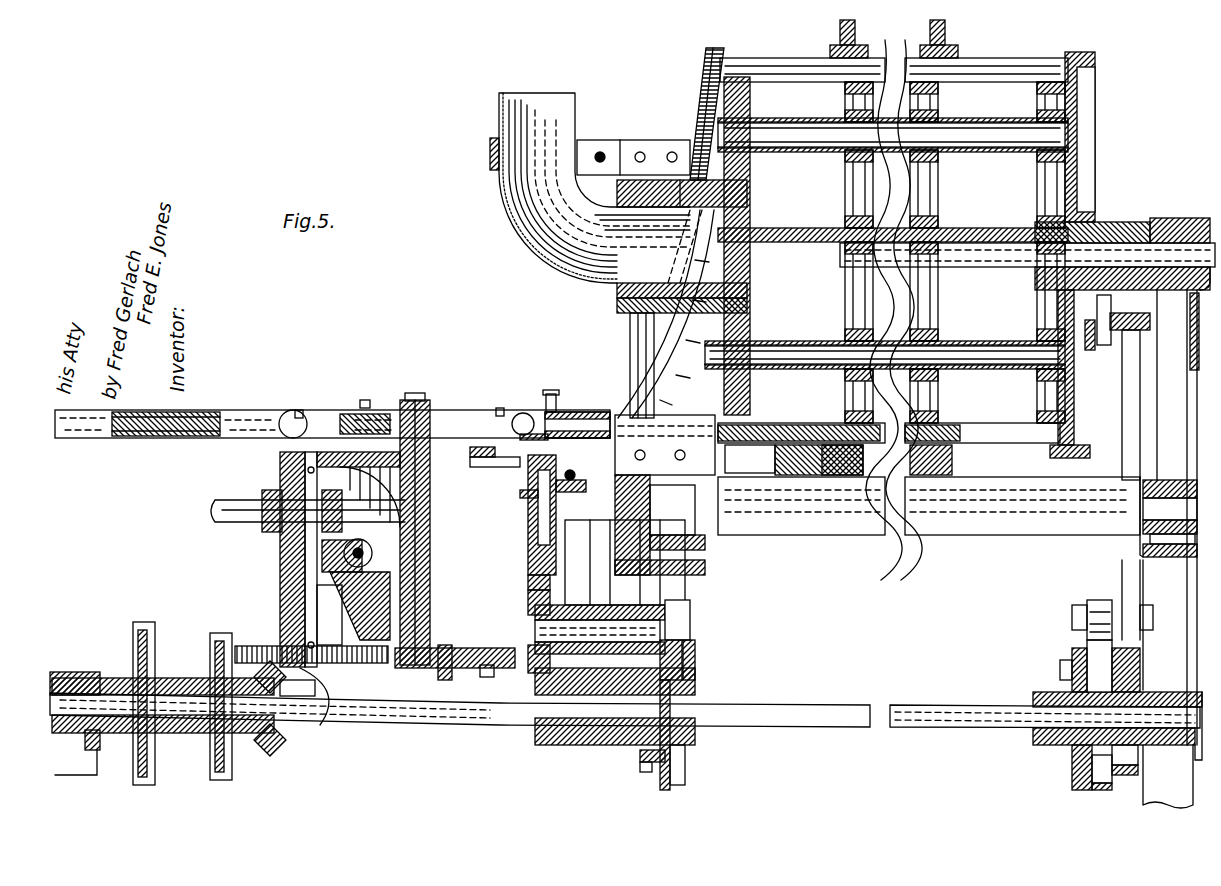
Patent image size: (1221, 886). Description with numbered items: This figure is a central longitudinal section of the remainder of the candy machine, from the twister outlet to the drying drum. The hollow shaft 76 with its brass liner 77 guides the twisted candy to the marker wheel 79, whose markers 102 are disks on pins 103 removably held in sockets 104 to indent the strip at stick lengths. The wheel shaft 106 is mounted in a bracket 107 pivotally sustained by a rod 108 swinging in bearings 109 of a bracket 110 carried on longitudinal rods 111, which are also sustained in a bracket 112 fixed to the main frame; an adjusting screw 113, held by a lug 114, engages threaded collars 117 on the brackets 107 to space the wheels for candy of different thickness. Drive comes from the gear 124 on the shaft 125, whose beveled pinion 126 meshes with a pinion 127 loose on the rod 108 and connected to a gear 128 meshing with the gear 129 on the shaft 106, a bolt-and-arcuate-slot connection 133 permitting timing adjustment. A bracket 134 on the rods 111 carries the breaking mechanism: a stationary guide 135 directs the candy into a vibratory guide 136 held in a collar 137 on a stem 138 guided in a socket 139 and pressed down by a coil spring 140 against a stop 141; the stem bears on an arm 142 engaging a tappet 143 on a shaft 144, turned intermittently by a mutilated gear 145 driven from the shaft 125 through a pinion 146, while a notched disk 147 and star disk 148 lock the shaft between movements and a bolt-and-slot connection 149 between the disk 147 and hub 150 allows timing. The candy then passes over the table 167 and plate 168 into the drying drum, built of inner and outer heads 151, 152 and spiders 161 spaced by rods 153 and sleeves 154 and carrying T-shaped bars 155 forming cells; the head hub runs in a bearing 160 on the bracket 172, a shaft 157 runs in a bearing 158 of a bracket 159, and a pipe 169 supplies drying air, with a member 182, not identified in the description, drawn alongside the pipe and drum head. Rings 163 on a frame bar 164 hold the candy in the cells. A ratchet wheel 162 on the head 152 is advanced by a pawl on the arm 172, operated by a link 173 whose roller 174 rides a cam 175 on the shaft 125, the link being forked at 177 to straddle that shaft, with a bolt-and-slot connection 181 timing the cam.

The hollow shaft 76 is at (180, 412).
The brass liner 77 is at (165, 440).
The combined indenting and advancing wheel 79 is at (445, 412).
The markers 102 is at (522, 413).
The pins 103 is at (497, 408).
The sockets 104 is at (340, 412).
The shafts 106 is at (445, 492).
The brackets 107 is at (395, 570).
The rods 108 is at (285, 575).
The bearings 109 is at (282, 598).
The bracket 110 is at (265, 545).
The rods 111 is at (245, 480).
The bracket 112 is at (628, 330).
The adjusting screw 113 is at (348, 560).
The lug 114 is at (380, 535).
The threaded collars 117 is at (380, 575).
The gear 124 is at (232, 778).
The shaft 125 is at (875, 703).
The beveled pinion 126 is at (272, 757).
The pinion 127 is at (325, 730).
The gear 128 is at (262, 640).
The gear 129 is at (485, 595).
The bolt-and-arcuate-slot connection 133 is at (462, 645).
The supporting bracket 134 is at (643, 525).
The stationary guide 135 is at (470, 455).
The intermittently vibratory guide 136 is at (585, 414).
The collar 137 is at (560, 394).
The stem 138 is at (589, 462).
The socket 139 is at (520, 490).
The coil spring 140 is at (528, 548).
The stop 141 is at (572, 500).
The arm 142 is at (528, 592).
The tappet wheel 143 is at (528, 655).
The shaft 144 is at (615, 628).
The mutilated gear-wheel 145 is at (695, 652).
The pinion 146 is at (690, 615).
The disk 147 is at (660, 787).
The star disk 148 is at (680, 605).
The bolt-and-arcuate-slot connection 149 is at (640, 758).
The hub 150 is at (615, 740).
The inner head 151 is at (752, 165).
The outer head 152 is at (1095, 182).
The rods 153 is at (780, 365).
The sleeves 154 is at (790, 375).
The bars 155 is at (993, 445).
The shaft 157 is at (1122, 240).
The bearing 158 is at (1170, 228).
The bracket 159 is at (1171, 549).
The bearing 160 is at (615, 308).
The spiders 161 is at (938, 312).
The ratchet wheel 162 is at (1075, 455).
The rings 163 is at (918, 36).
The frame bar 164 is at (960, 485).
The shelf or table 167 is at (780, 500).
The plate 168 is at (698, 405).
The pipe 169 is at (590, 188).
The arm 172 is at (1120, 305).
The link 173 is at (1130, 425).
The roller 174 is at (1097, 605).
The cam 175 is at (1087, 645).
The fork 177 is at (1115, 768).
The bolt-and-slot connection 181 is at (1058, 663).
The rack 182 is at (662, 400).